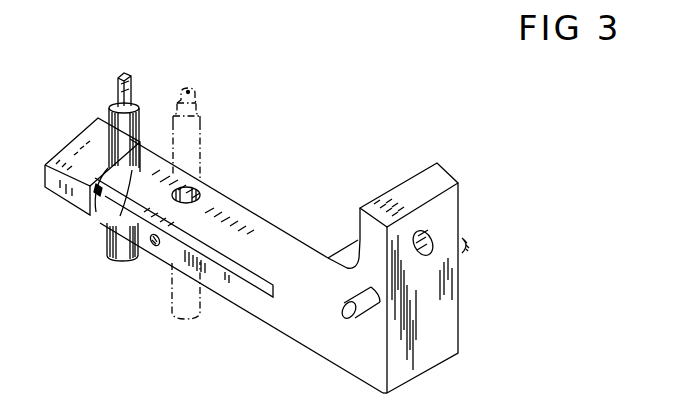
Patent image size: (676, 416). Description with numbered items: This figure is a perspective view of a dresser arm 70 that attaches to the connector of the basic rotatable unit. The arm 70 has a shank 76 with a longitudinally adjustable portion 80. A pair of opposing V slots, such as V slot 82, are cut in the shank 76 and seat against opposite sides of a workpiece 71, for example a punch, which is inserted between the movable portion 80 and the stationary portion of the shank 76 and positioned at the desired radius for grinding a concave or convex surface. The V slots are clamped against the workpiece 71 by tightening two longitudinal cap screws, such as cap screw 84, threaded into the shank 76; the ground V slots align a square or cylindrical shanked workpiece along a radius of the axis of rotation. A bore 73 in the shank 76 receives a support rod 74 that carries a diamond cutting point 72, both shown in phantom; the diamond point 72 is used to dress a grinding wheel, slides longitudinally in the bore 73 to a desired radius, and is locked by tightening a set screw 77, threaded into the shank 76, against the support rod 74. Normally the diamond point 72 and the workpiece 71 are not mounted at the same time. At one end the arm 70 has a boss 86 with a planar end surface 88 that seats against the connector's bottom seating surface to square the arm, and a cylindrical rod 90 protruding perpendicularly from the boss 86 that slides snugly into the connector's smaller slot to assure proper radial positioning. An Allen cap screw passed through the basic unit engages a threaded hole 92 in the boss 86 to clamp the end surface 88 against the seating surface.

The dresser arm 70 is at (300, 230).
The workpiece 71 is at (120, 95).
The diamond cutting point 72 is at (189, 92).
The bore 73 is at (200, 186).
The support rod 74 is at (190, 157).
The shank 76 is at (262, 238).
The set screw 77 is at (155, 246).
The longitudinally adjustable portion 80 is at (74, 147).
The V slot 82 is at (112, 222).
The cap screw 84 is at (100, 187).
The boss 86 is at (437, 180).
The planar end surface 88 is at (442, 337).
The cylindrical rod 90 is at (348, 312).
The threaded hole 92 is at (432, 242).